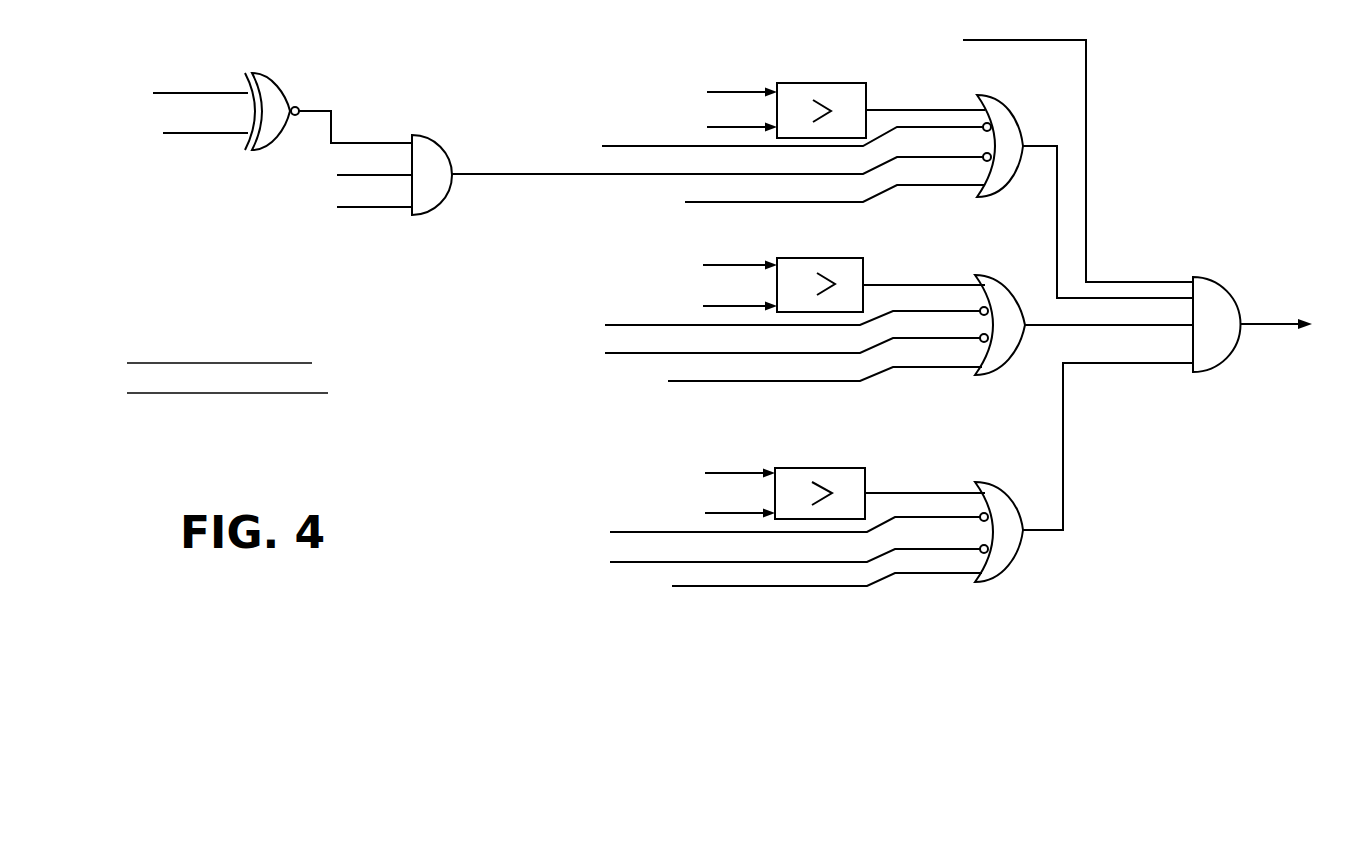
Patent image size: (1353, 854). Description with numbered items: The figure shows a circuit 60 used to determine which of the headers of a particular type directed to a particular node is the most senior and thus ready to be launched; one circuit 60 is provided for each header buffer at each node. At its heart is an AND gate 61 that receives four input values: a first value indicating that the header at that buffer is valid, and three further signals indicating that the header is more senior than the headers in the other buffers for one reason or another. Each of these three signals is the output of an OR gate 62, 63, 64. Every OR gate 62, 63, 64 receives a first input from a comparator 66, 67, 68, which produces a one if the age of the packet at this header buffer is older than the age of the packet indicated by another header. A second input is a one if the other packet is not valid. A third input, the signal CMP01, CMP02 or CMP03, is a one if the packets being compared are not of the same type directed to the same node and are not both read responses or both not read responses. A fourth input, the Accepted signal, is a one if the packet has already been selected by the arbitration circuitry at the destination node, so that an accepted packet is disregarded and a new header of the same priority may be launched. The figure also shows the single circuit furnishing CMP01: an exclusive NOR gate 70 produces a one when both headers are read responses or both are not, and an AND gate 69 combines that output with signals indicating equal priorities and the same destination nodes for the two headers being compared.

The circuit 60 is at (527, 44).
The AND gate 61 is at (1217, 324).
The OR gate 62 is at (1008, 122).
The OR gate 63 is at (1005, 295).
The OR gate 64 is at (1005, 505).
The comparator 66 is at (852, 90).
The comparator 67 is at (848, 262).
The comparator 68 is at (858, 473).
The AND gate 69 is at (432, 175).
The exclusive NOR gate 70 is at (278, 94).